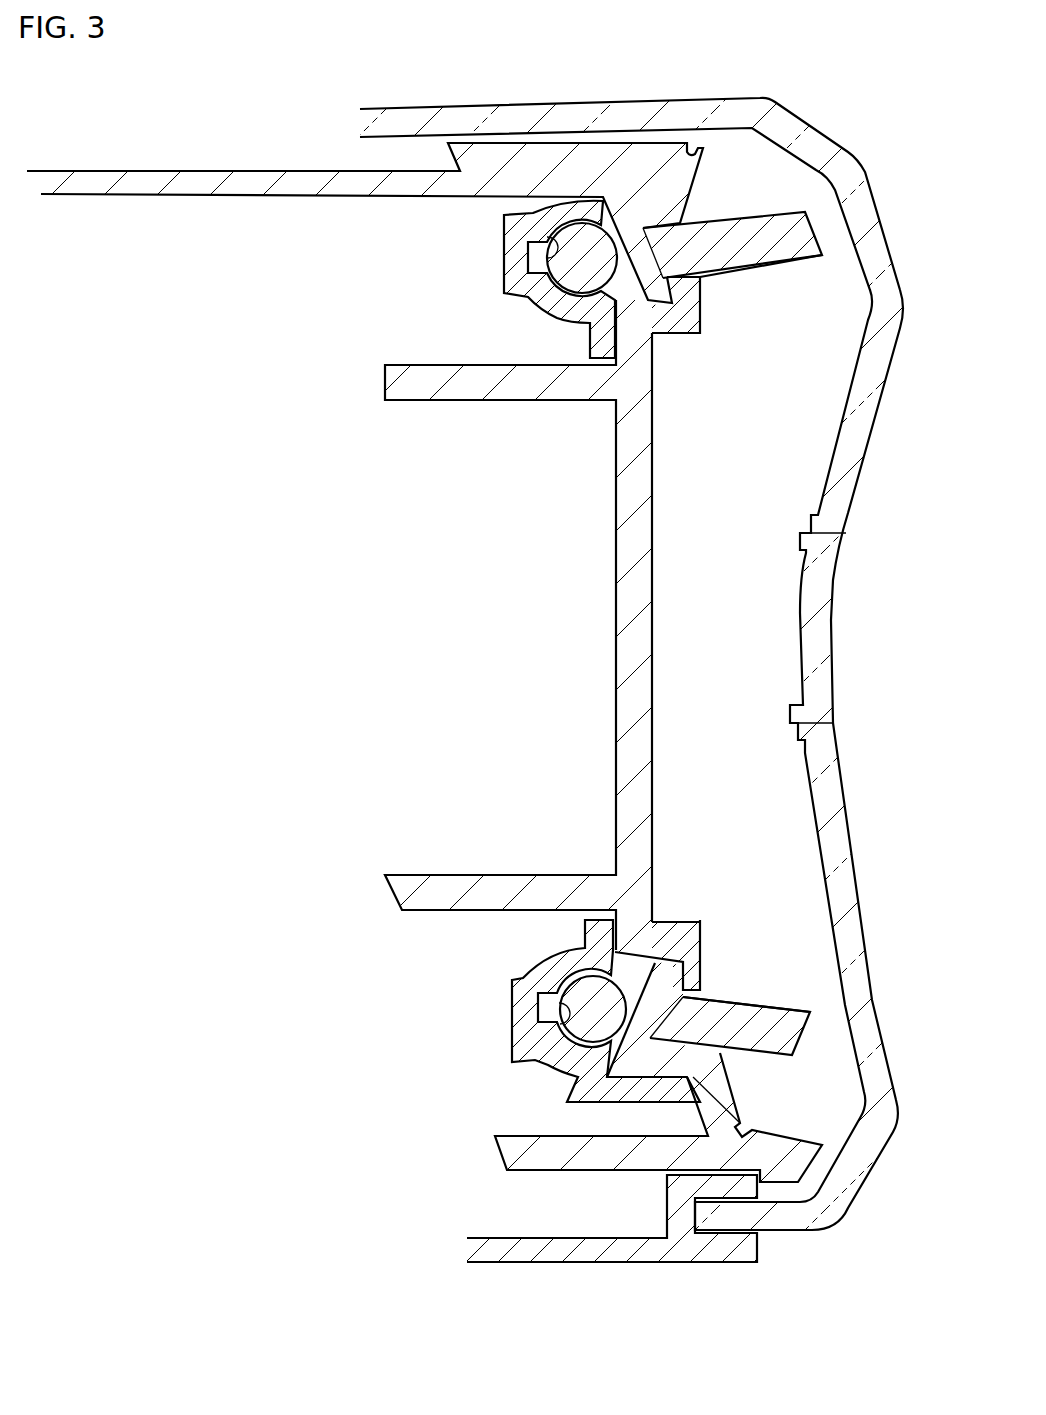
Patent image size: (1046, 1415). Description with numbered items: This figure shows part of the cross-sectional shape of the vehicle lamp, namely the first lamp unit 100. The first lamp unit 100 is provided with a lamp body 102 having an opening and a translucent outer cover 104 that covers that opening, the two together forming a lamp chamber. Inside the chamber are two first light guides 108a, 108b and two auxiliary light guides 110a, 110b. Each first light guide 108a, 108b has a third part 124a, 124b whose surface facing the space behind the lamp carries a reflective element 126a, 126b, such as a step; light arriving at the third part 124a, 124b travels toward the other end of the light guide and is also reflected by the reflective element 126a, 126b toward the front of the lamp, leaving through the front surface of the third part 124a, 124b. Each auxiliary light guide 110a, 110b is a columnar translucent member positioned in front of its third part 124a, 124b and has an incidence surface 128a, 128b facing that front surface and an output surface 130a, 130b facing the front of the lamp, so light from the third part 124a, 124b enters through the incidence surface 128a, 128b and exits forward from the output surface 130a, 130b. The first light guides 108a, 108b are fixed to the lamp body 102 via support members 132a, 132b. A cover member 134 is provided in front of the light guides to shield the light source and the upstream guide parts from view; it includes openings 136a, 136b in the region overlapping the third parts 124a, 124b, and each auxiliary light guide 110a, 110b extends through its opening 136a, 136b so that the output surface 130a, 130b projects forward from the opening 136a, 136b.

The first lamp unit 100 is at (592, 1381).
The lamp body 102 is at (626, 1265).
The outer cover 104 is at (483, 100).
The first light guide 108a is at (478, 294).
The first light guide 108b is at (486, 975).
The auxiliary light guide 110a is at (780, 266).
The auxiliary light guide 110b is at (765, 1000).
The third part 124a is at (552, 247).
The third part 124b is at (564, 1013).
The reflective element 126a is at (546, 242).
The reflective element 126b is at (545, 1028).
The incidence surface 128a is at (683, 338).
The incidence surface 128b is at (683, 920).
The output surface 130a is at (803, 214).
The output surface 130b is at (810, 1045).
The support member 132a is at (505, 262).
The support member 132b is at (512, 1005).
The cover member 134 is at (616, 612).
The opening 136a is at (700, 268).
The opening 136b is at (688, 995).